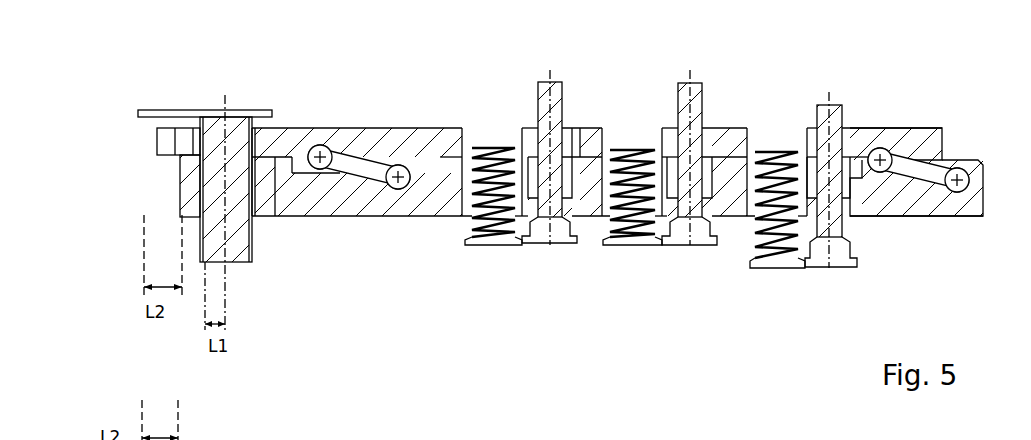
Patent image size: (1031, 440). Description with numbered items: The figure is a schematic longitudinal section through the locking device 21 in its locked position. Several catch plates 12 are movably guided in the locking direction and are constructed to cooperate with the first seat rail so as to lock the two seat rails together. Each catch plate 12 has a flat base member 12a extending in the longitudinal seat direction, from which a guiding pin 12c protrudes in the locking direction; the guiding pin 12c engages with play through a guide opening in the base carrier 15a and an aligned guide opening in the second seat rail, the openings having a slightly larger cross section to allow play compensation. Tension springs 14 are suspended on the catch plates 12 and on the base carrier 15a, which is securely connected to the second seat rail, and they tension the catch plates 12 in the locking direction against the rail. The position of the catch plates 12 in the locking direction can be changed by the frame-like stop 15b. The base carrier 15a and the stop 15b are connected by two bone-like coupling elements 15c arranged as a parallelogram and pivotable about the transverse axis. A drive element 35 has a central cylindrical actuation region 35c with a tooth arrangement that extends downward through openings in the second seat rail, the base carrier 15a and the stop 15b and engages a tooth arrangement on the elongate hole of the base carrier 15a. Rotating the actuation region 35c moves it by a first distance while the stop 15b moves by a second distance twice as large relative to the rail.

The drive element 35 is at (231, 112).
The actuation region 35c is at (242, 158).
The locking device 21 is at (722, 267).
The base carrier 15a is at (918, 142).
The stop 15b is at (952, 217).
The coupling element 15c is at (360, 167).
The guiding pin 12c is at (560, 83).
The base member 12a is at (532, 243).
The tension spring 14 is at (496, 215).
The catch plate 12 is at (473, 248).